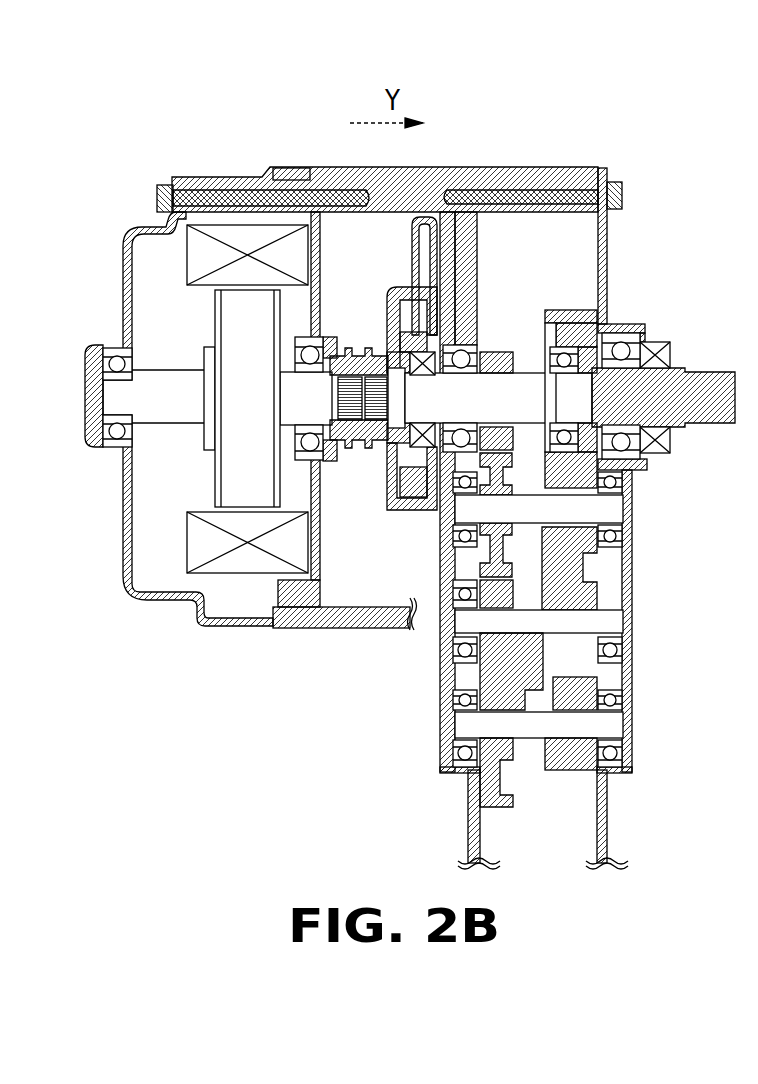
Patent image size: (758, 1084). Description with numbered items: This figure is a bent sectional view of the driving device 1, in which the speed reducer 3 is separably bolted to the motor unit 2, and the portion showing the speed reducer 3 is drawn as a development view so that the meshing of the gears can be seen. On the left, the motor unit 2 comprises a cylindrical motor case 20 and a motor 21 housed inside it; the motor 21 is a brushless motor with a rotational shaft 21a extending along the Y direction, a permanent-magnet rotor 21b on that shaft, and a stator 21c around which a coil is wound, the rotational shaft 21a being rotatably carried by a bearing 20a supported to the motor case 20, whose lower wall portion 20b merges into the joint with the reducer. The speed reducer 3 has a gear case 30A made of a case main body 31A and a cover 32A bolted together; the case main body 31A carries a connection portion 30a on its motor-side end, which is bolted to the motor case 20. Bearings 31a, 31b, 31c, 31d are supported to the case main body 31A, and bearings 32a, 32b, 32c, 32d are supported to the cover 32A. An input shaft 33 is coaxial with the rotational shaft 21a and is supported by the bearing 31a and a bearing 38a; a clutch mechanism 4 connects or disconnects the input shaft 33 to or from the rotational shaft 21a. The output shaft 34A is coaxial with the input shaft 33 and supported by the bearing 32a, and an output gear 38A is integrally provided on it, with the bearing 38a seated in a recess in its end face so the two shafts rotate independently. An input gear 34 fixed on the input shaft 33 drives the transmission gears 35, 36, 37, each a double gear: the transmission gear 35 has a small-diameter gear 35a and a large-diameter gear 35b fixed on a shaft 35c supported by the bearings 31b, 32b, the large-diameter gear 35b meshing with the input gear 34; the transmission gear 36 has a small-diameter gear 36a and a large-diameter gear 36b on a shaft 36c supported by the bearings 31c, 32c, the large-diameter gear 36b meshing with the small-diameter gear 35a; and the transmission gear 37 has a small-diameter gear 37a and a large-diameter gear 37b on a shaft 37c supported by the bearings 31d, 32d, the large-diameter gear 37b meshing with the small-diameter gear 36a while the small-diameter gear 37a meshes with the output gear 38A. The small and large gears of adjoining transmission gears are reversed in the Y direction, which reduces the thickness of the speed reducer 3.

The driving device 1 is at (103, 183).
The motor unit 2 is at (103, 295).
The speed reducer 3 is at (670, 212).
The clutch mechanism 4 is at (388, 278).
The motor case 20 is at (124, 598).
The bearing 20a is at (97, 448).
The motor case bottom plate 20b is at (294, 630).
The motor 21 is at (165, 270).
The rotational shaft 21a is at (175, 424).
The rotor 21b is at (213, 333).
The stator 21c is at (197, 288).
The gear case 30A is at (653, 110).
The connection portion 30a is at (320, 628).
The case main body 31A is at (578, 168).
The bearing 31a is at (462, 345).
The bearing 31b is at (443, 547).
The bearing 31c is at (465, 660).
The bearing 31d is at (455, 748).
The cover 32A is at (607, 168).
The bearing 32a is at (622, 332).
The bearing 32b is at (630, 533).
The bearing 32c is at (633, 653).
The bearing 32d is at (632, 755).
The input shaft 33 is at (523, 380).
The input gear 34 is at (487, 352).
The output shaft 34A is at (705, 370).
The transmission gear 35 is at (562, 546).
The small-diameter gear 35a is at (460, 497).
The large-diameter gear 35b is at (453, 553).
The shaft 35c is at (612, 508).
The transmission gear 36 is at (570, 654).
The small-diameter gear 36a is at (495, 610).
The large-diameter gear 36b is at (535, 560).
The shaft 36c is at (613, 625).
The transmission gear 37 is at (567, 786).
The small-diameter gear 37a is at (555, 773).
The large-diameter gear 37b is at (488, 780).
The shaft 37c is at (615, 727).
The output gear 38A is at (585, 310).
The bearing 38a is at (558, 347).